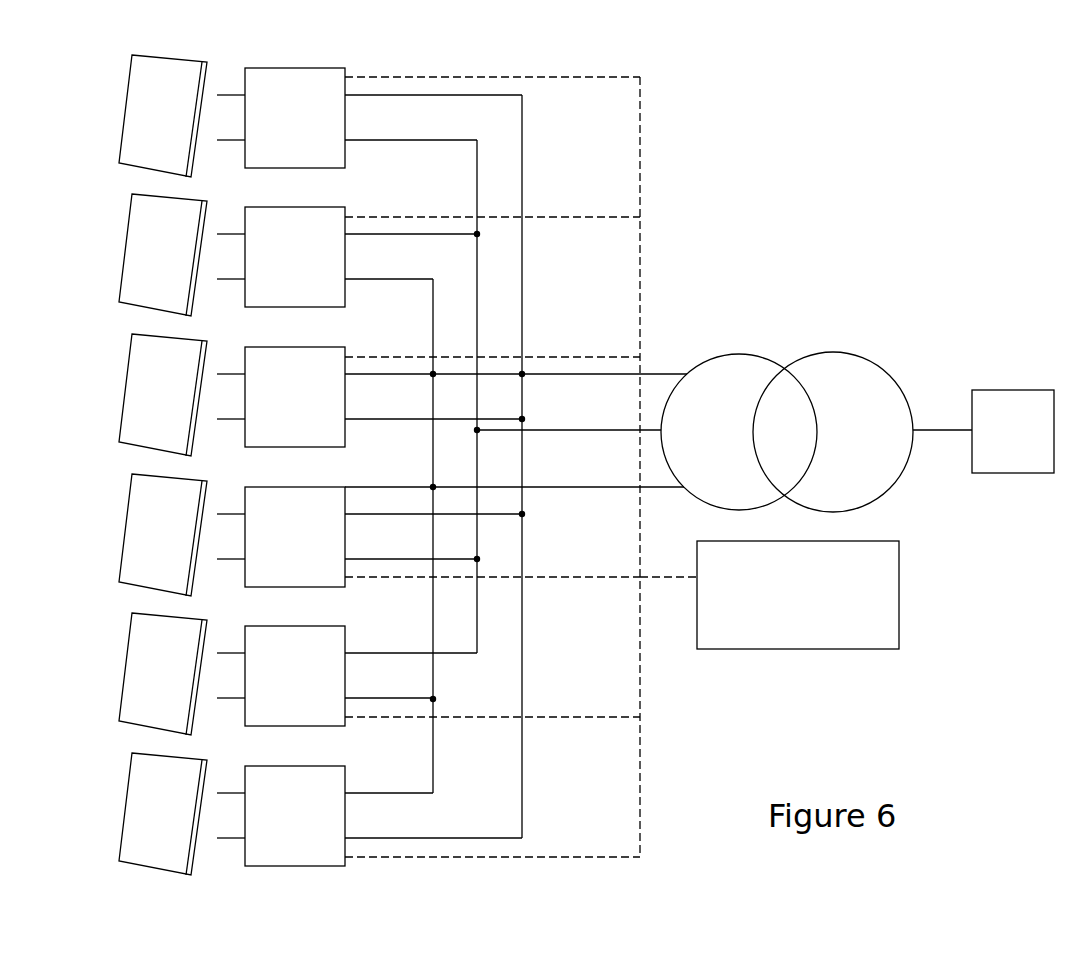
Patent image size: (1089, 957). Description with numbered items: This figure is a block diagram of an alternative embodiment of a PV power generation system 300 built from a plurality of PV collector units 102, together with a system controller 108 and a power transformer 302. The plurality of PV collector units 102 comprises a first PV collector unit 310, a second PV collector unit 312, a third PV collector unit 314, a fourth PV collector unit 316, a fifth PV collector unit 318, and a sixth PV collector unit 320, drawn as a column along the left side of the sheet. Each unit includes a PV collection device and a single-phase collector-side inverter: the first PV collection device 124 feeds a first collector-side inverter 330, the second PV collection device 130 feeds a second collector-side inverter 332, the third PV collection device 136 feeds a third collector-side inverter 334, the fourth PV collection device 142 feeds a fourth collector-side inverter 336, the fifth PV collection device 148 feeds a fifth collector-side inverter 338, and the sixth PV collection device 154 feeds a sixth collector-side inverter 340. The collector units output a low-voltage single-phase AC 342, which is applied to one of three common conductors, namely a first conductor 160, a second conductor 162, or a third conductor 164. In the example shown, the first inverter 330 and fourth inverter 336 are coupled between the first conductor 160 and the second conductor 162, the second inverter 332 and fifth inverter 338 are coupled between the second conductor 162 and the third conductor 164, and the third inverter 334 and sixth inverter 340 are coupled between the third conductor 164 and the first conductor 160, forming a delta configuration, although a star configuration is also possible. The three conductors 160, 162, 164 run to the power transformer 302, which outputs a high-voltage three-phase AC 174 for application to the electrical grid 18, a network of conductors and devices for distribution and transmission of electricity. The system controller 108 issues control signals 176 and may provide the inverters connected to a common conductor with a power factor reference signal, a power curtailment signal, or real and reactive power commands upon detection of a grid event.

The PV collector units 102 is at (393, 44).
The PV power generation system 300 is at (779, 188).
The first PV collector unit 310 is at (113, 108).
The second PV collector unit 312 is at (113, 247).
The third PV collector unit 314 is at (113, 387).
The fourth PV collector unit 316 is at (113, 527).
The fifth PV collector unit 318 is at (113, 666).
The sixth PV collector unit 320 is at (113, 806).
The first PV collection device 124 is at (192, 177).
The second PV collection device 130 is at (192, 316).
The third PV collection device 136 is at (192, 456).
The fourth PV collection device 142 is at (192, 596).
The fifth PV collection device 148 is at (192, 735).
The sixth PV collection device 154 is at (143, 870).
The first collector-side inverter 330 is at (345, 157).
The second collector-side inverter 332 is at (345, 297).
The third collector-side inverter 334 is at (345, 437).
The fourth collector-side inverter 336 is at (345, 498).
The fifth collector-side inverter 338 is at (345, 637).
The sixth collector-side inverter 340 is at (345, 777).
The low-voltage single-phase AC 342 is at (547, 346).
The first conductor 160 is at (664, 374).
The second conductor 162 is at (540, 428).
The third conductor 164 is at (540, 485).
The power transformer 302 is at (890, 484).
The high-voltage three-phase AC 174 is at (938, 428).
The electrical grid 18 is at (1003, 389).
The control signals 176 is at (663, 576).
The system controller 108 is at (833, 650).